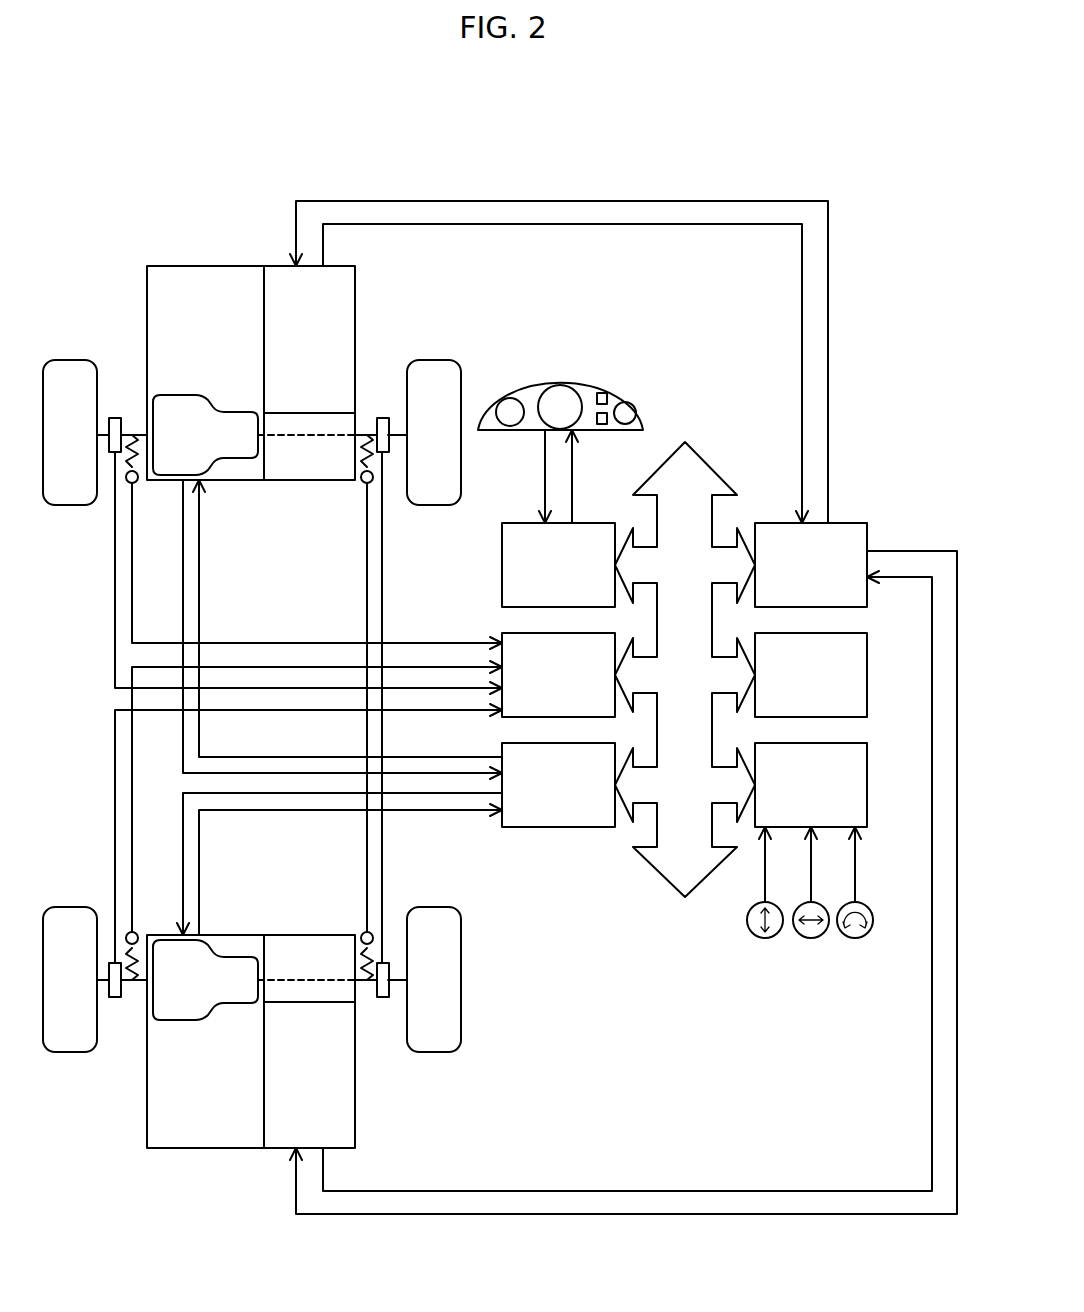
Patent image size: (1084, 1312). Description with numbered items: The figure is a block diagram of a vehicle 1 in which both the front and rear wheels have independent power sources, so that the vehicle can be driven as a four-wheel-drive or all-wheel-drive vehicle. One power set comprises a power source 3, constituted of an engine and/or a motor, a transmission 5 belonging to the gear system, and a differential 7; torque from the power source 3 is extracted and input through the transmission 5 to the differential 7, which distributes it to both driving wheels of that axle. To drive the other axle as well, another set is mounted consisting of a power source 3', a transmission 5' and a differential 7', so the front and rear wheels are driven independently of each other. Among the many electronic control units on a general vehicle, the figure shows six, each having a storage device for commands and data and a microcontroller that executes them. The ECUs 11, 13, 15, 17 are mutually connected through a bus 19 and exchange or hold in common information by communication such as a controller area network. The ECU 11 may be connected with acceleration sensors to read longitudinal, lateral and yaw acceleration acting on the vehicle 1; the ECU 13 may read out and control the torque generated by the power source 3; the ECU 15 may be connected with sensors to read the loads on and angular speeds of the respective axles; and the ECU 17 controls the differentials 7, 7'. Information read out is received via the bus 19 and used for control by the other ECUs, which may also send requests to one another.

The vehicle 1 is at (597, 146).
The power source 3 is at (334, 363).
The power source 3' is at (336, 1052).
The transmission 5 is at (278, 341).
The rear drive unit 5' is at (281, 1076).
The differential 7 is at (205, 400).
The differential 7' is at (205, 1015).
The ECU 11 is at (867, 772).
The ECU 13 is at (867, 522).
The ECU 15 is at (502, 632).
The ECU 17 is at (565, 827).
The bus 19 is at (703, 459).